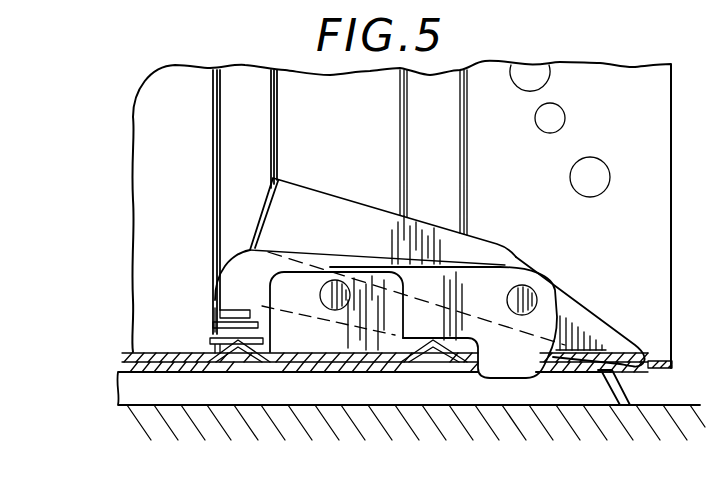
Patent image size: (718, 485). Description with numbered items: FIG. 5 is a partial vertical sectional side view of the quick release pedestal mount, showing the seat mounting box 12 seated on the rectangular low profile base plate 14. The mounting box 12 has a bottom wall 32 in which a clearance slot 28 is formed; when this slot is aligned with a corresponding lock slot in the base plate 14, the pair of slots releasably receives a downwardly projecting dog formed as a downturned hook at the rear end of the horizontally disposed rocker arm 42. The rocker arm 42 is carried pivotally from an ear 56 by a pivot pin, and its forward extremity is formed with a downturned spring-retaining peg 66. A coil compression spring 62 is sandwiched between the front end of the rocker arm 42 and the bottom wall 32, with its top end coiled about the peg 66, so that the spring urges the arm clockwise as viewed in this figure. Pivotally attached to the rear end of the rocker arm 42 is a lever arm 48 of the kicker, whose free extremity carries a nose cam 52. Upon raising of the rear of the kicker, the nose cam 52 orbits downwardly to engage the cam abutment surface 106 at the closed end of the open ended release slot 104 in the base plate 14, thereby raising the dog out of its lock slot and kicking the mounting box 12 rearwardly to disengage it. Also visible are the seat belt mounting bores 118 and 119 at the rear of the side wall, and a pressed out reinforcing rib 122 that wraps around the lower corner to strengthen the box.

The seat mounting box 12 is at (656, 92).
The base plate 14 is at (263, 374).
The clearance slot 28 is at (571, 336).
The bottom wall 32 is at (135, 358).
The rocker arm 42 is at (502, 270).
The lever arm 48 is at (316, 229).
The nose cam 52 is at (634, 372).
The ear 56 is at (310, 307).
The coil compression spring 62 is at (229, 341).
The spring-retaining peg 66 is at (218, 315).
The release slot 104 is at (628, 398).
The cam abutment surface 106 is at (605, 373).
The seat belt mounting bore 118 is at (603, 160).
The seat belt mounting bore 119 is at (579, 97).
The reinforcing rib 122 is at (403, 120).